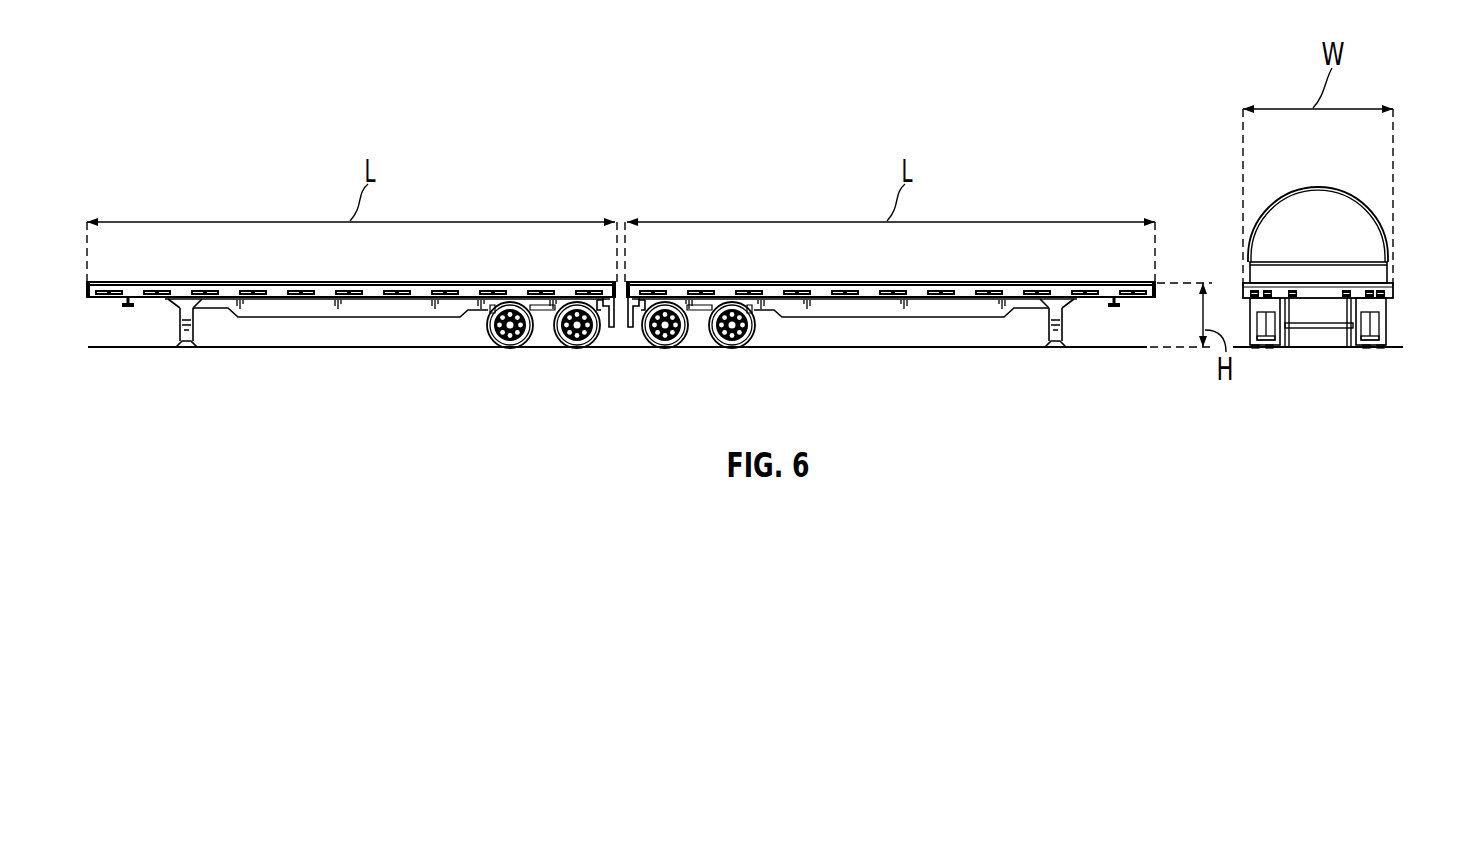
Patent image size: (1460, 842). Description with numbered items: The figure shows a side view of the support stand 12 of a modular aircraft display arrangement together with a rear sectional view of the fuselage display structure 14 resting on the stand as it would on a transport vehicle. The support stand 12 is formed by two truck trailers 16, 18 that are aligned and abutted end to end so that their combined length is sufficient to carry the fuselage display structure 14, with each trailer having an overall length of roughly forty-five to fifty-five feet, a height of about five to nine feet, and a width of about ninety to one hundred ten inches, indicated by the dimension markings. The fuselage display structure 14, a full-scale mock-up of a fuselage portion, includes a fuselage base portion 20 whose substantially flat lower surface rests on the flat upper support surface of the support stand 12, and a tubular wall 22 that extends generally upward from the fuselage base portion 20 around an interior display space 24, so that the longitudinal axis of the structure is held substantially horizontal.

The support stand 12 is at (282, 313).
The fuselage display structure 14 is at (1318, 185).
The trailer 16 is at (413, 307).
The trailer 18 is at (853, 308).
The fuselage base portion 20 is at (1380, 276).
The tubular wall 22 is at (1283, 192).
The interior display space 24 is at (1370, 245).